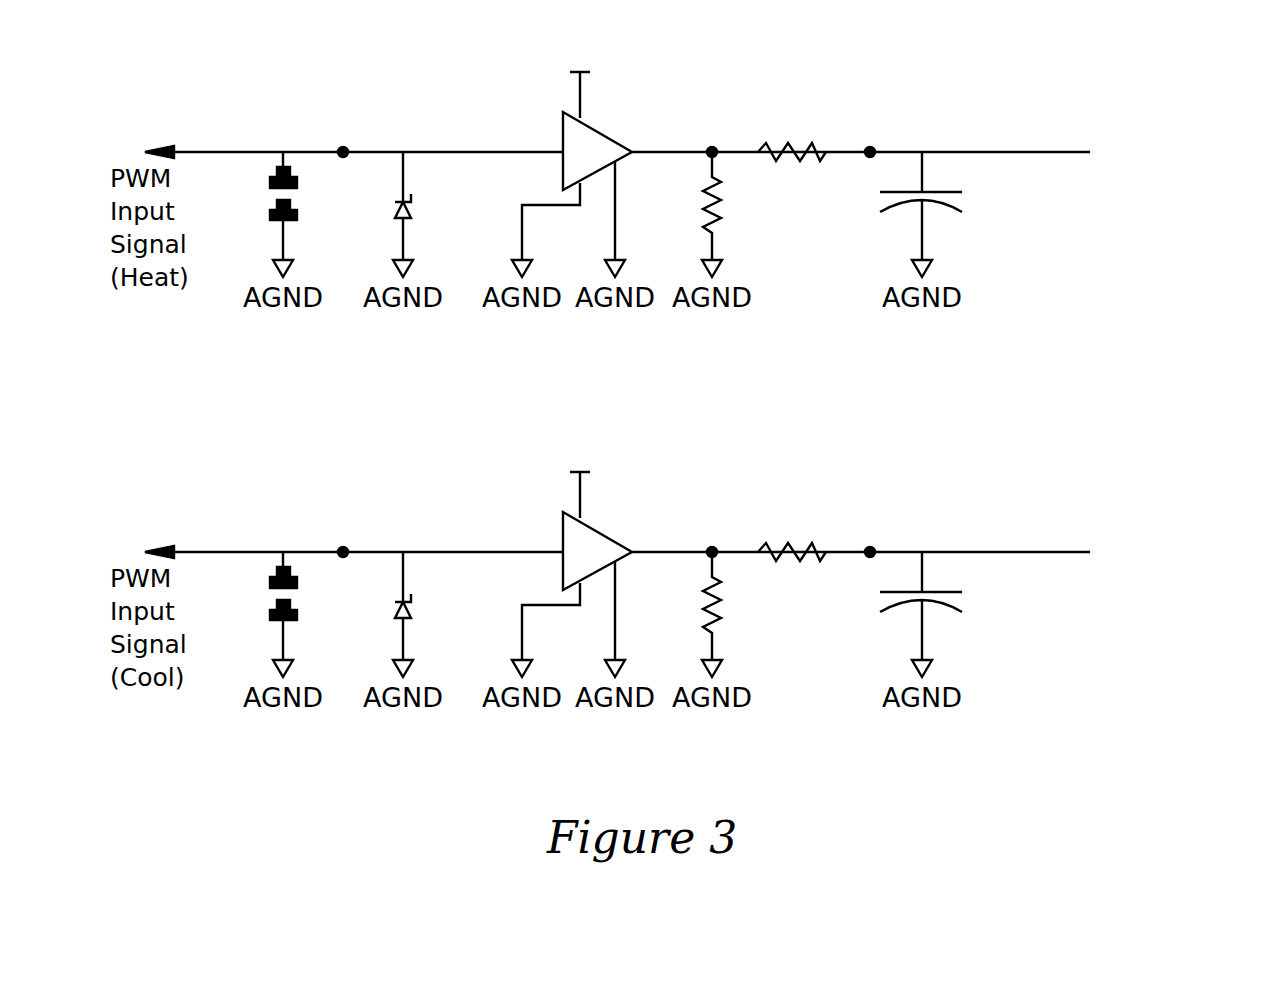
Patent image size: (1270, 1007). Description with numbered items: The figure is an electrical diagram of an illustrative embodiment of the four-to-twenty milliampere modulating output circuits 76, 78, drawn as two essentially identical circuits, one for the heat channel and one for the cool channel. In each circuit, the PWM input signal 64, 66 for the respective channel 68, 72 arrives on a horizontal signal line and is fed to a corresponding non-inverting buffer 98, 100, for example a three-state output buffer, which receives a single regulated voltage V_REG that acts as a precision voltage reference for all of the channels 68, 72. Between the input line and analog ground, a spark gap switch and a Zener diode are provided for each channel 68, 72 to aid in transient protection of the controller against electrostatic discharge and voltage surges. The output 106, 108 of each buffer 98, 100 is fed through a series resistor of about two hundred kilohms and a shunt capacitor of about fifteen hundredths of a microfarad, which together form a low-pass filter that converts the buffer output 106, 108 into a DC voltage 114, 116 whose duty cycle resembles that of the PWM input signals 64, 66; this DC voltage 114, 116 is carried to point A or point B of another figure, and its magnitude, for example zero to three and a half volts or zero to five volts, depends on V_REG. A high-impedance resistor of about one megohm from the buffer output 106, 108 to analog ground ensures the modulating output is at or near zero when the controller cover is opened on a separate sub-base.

The PWM input signal 64 is at (217, 152).
The PWM input signal 66 is at (354, 529).
The buffer 98 is at (563, 120).
The buffer 100 is at (556, 555).
The output 106 is at (636, 150).
The output 108 is at (861, 532).
The 4-20 mA modulating output circuit 76 is at (663, 80).
The 4-20 mA modulating output circuit 78 is at (708, 450).
The channel 68 is at (728, 115).
The channel 72 is at (773, 485).
The DC voltage 114 is at (1053, 150).
The DC voltage 116 is at (1131, 533).